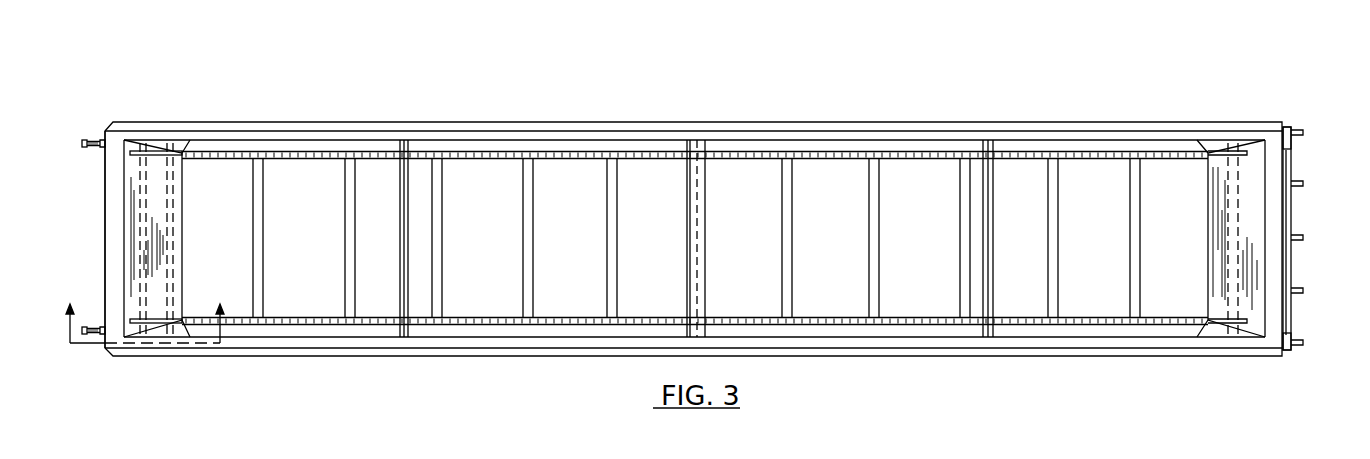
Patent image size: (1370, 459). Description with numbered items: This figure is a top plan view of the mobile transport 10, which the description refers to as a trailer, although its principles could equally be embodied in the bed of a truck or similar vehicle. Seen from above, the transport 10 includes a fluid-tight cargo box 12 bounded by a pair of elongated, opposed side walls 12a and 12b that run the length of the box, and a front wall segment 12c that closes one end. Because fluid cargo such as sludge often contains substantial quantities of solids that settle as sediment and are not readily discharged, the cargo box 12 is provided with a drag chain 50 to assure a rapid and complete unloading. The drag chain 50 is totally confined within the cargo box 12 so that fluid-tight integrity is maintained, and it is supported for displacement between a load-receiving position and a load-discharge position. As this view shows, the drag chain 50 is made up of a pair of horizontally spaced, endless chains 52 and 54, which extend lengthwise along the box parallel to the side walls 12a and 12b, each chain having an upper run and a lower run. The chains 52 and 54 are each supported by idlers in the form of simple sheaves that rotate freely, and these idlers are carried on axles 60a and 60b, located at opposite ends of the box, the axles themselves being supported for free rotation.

The mobile transport 10 is at (1000, 75).
The cargo box 12 is at (462, 122).
The side wall 12a is at (660, 122).
The side wall 12b is at (468, 357).
The front wall segment 12c is at (104, 242).
The drag chain 50 is at (1112, 162).
The endless chain 52 is at (813, 160).
The endless chain 54 is at (857, 317).
The axle 60a is at (140, 205).
The axle 60b is at (1238, 223).